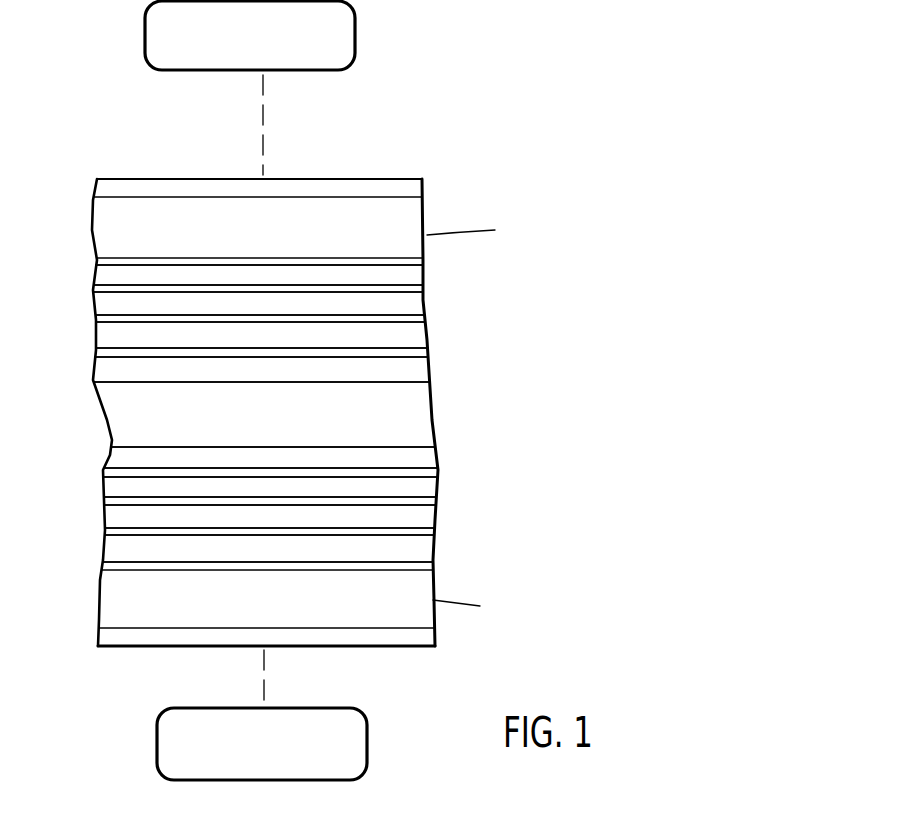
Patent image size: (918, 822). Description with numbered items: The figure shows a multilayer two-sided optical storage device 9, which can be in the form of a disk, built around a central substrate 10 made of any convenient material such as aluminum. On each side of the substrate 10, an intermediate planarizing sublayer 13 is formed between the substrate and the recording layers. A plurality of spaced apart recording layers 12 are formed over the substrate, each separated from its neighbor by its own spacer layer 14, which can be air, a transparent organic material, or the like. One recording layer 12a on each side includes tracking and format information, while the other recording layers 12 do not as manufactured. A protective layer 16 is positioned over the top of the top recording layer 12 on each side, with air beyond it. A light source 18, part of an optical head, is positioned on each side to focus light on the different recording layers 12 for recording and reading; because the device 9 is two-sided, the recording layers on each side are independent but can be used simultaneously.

The multilayer two-sided optical storage device 9 is at (473, 133).
The substrate 10 is at (435, 418).
The recording layer 12 is at (98, 262).
The recording layer 12a is at (98, 352).
The intermediate planarizing sublayer 13 is at (428, 370).
The spacer layer 14 is at (428, 278).
The protective layer 16 is at (427, 190).
The light source 18 is at (355, 40).